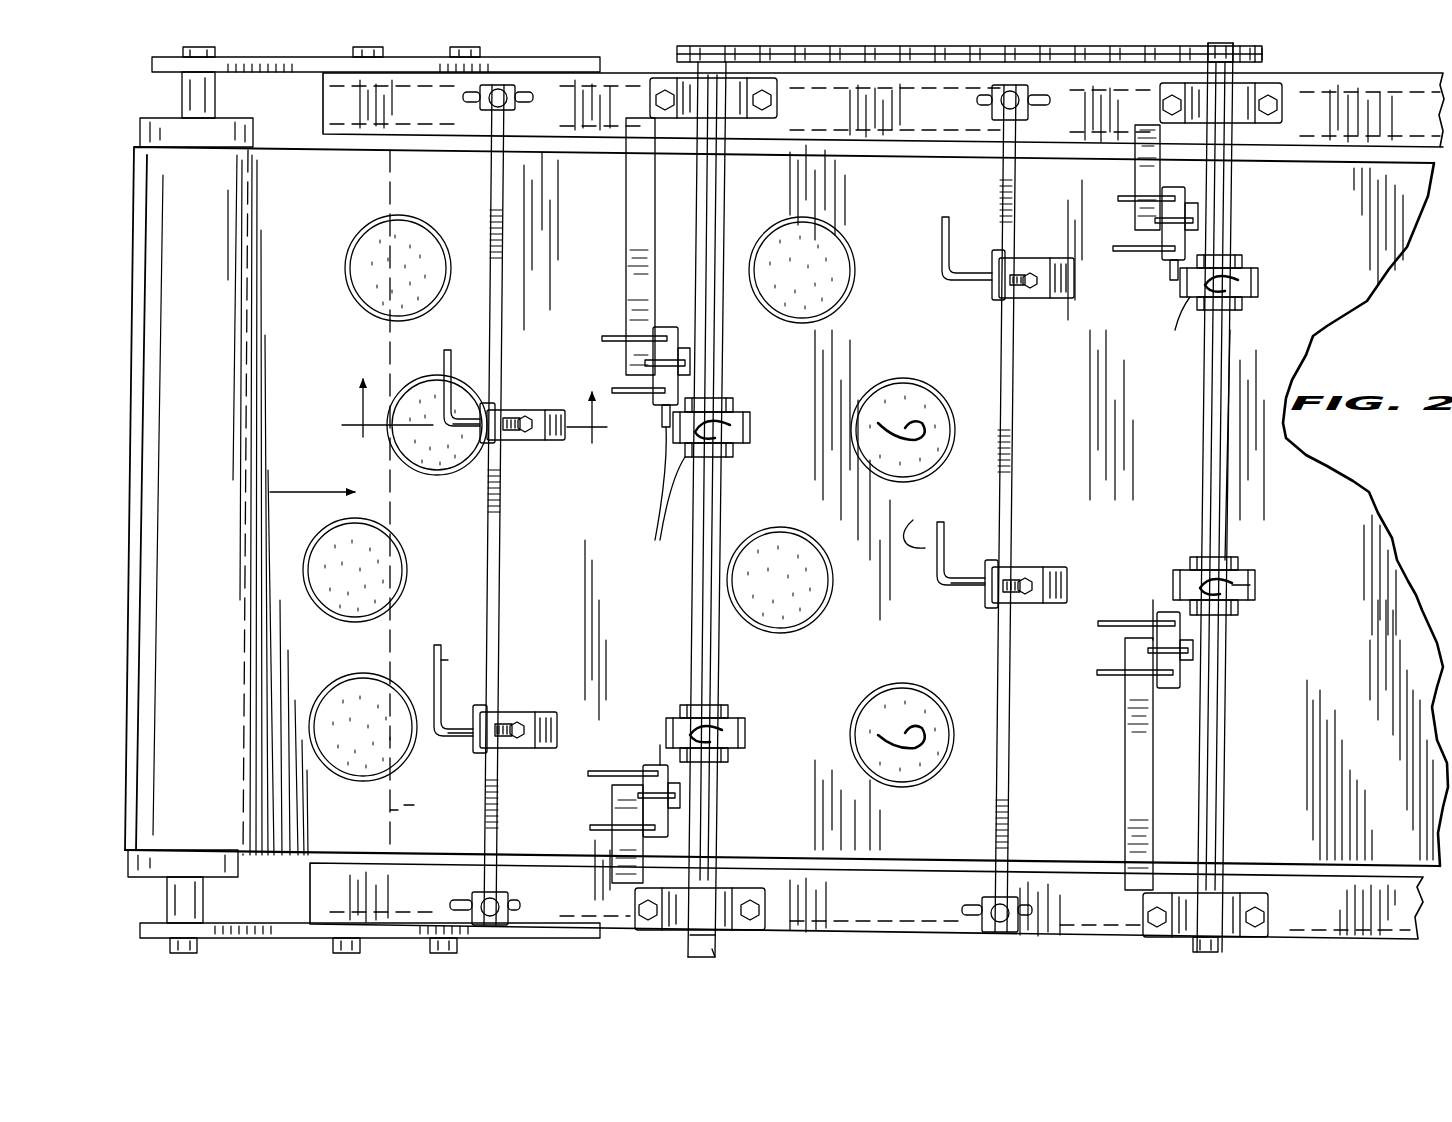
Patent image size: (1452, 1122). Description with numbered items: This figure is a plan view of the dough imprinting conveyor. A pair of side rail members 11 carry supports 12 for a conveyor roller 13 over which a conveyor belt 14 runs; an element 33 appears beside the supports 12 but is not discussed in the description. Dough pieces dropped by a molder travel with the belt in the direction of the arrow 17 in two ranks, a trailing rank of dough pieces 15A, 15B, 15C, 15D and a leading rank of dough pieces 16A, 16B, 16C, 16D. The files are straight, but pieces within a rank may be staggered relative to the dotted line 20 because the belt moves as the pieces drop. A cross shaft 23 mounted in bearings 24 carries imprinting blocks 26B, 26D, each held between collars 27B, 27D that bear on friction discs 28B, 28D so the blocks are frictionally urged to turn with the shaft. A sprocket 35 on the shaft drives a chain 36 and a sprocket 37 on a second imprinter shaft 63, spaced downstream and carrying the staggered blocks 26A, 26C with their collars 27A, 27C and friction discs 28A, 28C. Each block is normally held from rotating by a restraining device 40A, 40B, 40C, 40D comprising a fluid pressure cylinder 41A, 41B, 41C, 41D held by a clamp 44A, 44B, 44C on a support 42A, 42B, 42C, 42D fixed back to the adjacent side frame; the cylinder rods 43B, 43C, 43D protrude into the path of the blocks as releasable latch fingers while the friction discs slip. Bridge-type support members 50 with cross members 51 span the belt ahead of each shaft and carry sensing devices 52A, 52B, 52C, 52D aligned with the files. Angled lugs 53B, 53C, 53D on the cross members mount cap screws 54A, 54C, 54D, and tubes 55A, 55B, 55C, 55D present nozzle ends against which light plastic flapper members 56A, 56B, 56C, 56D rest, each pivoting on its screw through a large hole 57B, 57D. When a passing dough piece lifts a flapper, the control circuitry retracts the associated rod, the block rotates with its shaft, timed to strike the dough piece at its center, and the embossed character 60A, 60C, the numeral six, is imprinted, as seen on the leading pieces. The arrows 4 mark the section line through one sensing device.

The side rail member 11 is at (565, 80).
The support 12 is at (305, 75).
The conveyor roller 13 is at (150, 120).
The conveyor belt 14 is at (786, 522).
The dough piece 15A is at (380, 228).
The dough piece 15B is at (422, 385).
The dough piece 15C is at (405, 575).
The dough piece 15D is at (358, 675).
The dough piece 16A is at (830, 250).
The dough piece 16B is at (912, 392).
The dough piece 16C is at (782, 540).
The dough piece 16D is at (930, 710).
The arrow 17 is at (305, 492).
The dotted line 20 is at (417, 803).
The cross shaft 23 is at (697, 823).
The bearing 24 is at (688, 930).
The imprinting block 26A is at (1258, 280).
The imprinting block 26B is at (750, 418).
The imprinting block 26C is at (1255, 575).
The imprinting block 26D is at (745, 728).
The collar 27A is at (1240, 258).
The collar 27B is at (728, 398).
The collar 27C is at (1190, 560).
The collar 27D is at (728, 705).
The friction disc 28A is at (1240, 310).
The friction disc 28B is at (664, 498).
The friction disc 28C is at (1238, 562).
The friction disc 28D is at (740, 718).
The post 33 is at (309, 500).
The sprocket 35 is at (680, 48).
The chain 36 is at (866, 507).
The sprocket 37 is at (1245, 46).
The restraining device 40A is at (1186, 202).
The restraining device 40B is at (615, 310).
The restraining device 40C is at (1164, 732).
The restraining device 40D is at (601, 788).
The fluid pressure cylinder 41A is at (1188, 195).
The fluid pressure cylinder 41B is at (655, 330).
The fluid pressure cylinder 41C is at (1173, 690).
The fluid pressure cylinder 41D is at (648, 768).
The support 42A is at (1135, 173).
The support 42B is at (628, 255).
The support 42C is at (1138, 770).
The support 42D is at (615, 808).
The cylinder rod 43B is at (662, 430).
The cylinder rod 43C is at (1155, 600).
The cylinder rod 43D is at (660, 745).
The clamp 44A is at (1195, 220).
The clamp 44B is at (648, 362).
The clamp 44C is at (1150, 650).
The support member 50 is at (493, 200).
The cross member 51 is at (1004, 405).
The sensing device 52A is at (1035, 258).
The sensing device 52B is at (528, 405).
The sensing device 52C is at (1022, 565).
The sensing device 52D is at (520, 714).
The angled lug 53B is at (488, 403).
The angled lug 53C is at (985, 605).
The angled lug 53D is at (478, 752).
The cap screw 54A is at (1037, 280).
The cap screw 54C is at (1028, 595).
The cap screw 54D is at (513, 740).
The tube 55A is at (947, 218).
The tube 55B is at (442, 360).
The tube 55C is at (944, 536).
The tube 55D is at (432, 660).
The flapper member 56A is at (1052, 300).
The flapper member 56B is at (560, 410).
The flapper member 56C is at (1048, 567).
The flapper member 56D is at (543, 748).
The hole 57B is at (522, 432).
The hole 57D is at (495, 712).
The character 60A is at (1190, 300).
The character 60C is at (1255, 585).
The second imprinter shaft 63 is at (1203, 415).
The section line 4 is at (472, 431).